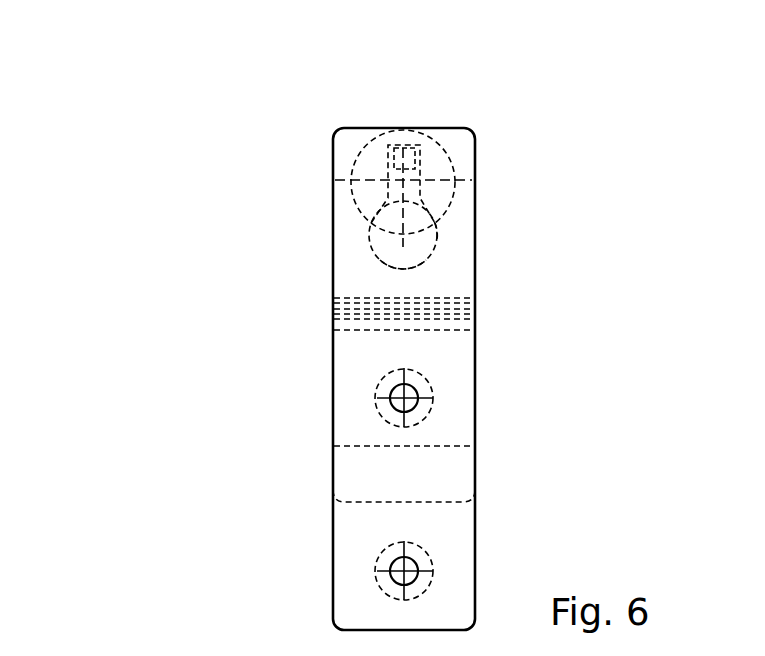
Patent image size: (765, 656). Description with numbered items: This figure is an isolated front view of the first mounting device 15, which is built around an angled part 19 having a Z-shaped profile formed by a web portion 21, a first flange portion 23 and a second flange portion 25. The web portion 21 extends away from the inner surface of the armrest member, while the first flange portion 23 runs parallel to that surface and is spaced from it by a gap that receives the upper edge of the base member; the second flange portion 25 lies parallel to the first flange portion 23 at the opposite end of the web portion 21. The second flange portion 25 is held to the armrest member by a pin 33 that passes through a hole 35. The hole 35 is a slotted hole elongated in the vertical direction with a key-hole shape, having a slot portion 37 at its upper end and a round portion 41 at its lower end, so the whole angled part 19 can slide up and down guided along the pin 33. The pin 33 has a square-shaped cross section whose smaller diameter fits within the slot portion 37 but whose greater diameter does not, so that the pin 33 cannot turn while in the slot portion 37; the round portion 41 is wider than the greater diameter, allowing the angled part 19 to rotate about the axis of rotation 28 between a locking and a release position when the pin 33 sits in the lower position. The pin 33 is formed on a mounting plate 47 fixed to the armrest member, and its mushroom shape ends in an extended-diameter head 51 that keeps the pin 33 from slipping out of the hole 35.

The first mounting device 15 is at (170, 334).
The angled part 19 is at (367, 335).
The web portion 21 is at (367, 307).
The first flange portion 23 is at (347, 418).
The second flange portion 25 is at (450, 232).
The axis of rotation 28 is at (405, 154).
The pin 33 is at (411, 159).
The hole 35 is at (417, 253).
The slot portion 37 is at (385, 188).
The round portion 41 is at (441, 240).
The mounting plate 47 is at (430, 523).
The extended-diameter head 51 is at (437, 192).